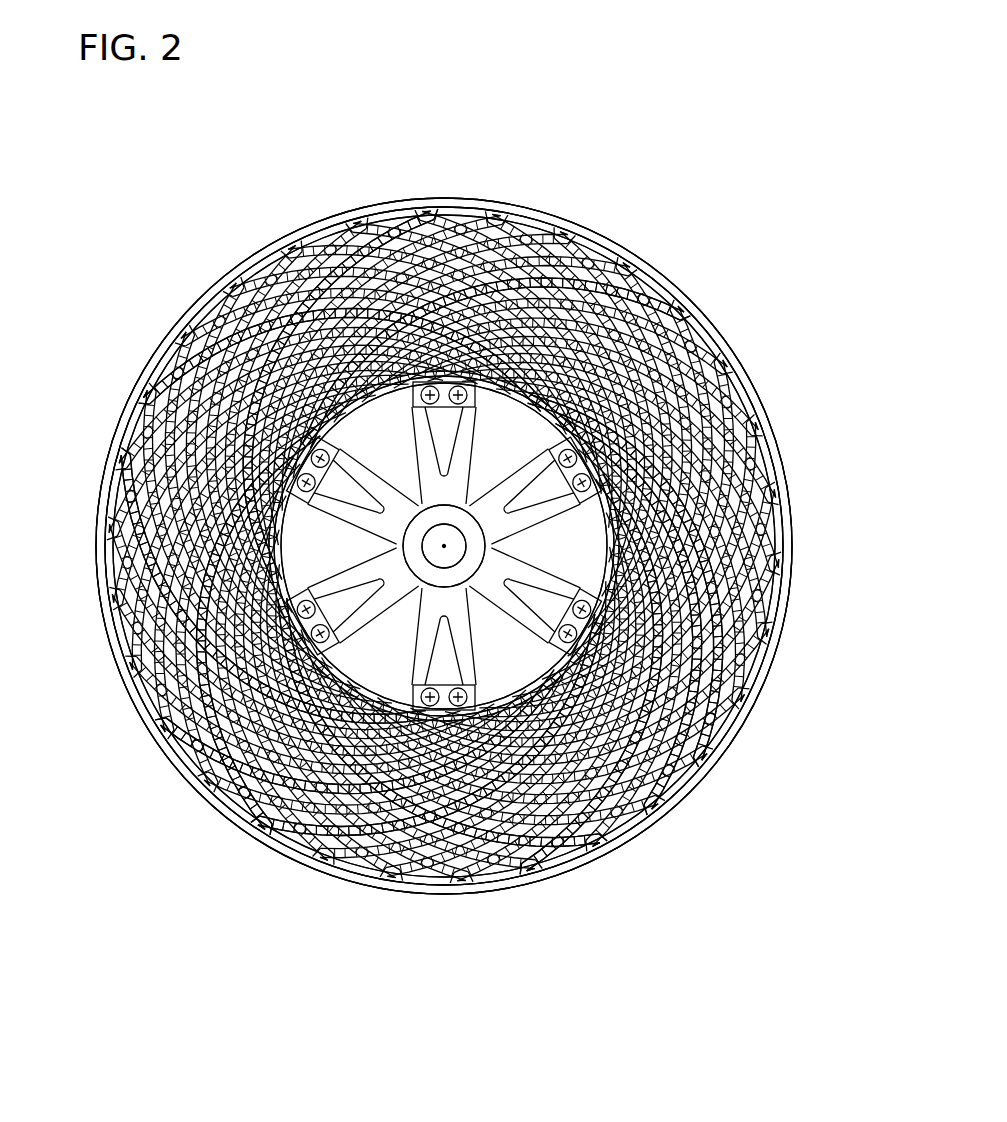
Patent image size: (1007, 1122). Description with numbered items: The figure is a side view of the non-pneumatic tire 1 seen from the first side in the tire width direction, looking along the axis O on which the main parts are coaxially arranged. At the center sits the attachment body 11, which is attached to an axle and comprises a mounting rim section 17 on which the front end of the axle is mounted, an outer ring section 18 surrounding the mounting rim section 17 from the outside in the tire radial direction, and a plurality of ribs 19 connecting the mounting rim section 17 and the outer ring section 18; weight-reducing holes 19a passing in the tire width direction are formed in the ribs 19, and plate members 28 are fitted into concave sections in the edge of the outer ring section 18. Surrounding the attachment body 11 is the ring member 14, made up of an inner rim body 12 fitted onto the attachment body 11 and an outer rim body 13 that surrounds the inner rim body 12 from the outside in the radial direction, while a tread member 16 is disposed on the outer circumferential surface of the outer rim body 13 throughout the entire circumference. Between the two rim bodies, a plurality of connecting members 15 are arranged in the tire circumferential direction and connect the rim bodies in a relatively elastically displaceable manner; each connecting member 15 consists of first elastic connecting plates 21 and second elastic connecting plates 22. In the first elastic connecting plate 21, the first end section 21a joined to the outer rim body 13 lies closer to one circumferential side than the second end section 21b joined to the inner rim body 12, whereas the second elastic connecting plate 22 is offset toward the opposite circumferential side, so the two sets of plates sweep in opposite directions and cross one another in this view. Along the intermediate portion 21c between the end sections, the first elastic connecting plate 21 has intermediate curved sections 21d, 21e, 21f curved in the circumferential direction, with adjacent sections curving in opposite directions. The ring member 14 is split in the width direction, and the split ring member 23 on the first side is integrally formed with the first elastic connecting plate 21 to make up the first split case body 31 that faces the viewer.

The non-pneumatic tire 1 is at (728, 126).
The axis O is at (444, 546).
The attachment body 11 is at (840, 460).
The inner rim body 12 is at (492, 378).
The outer rim body 13 is at (597, 238).
The ring member 14 is at (643, 135).
The connecting member 15 is at (150, 195).
The tread member 16 is at (445, 197).
The mounting rim section 17 is at (487, 545).
The outer ring section 18 is at (613, 527).
The rib 19 is at (543, 570).
The weight-reducing hole 19a is at (533, 843).
The first elastic connecting plate 21 is at (262, 267).
The first end section 21a is at (292, 837).
The second end section 21b is at (277, 573).
The intermediate portion 21c is at (233, 742).
The intermediate curved section 21d is at (643, 715).
The intermediate curved section 21e is at (728, 708).
The intermediate curved section 21f is at (610, 793).
The second elastic connecting plate 22 is at (247, 317).
The split ring member 23 is at (161, 748).
The plate member 28 is at (590, 420).
The first split case body 31 is at (66, 682).